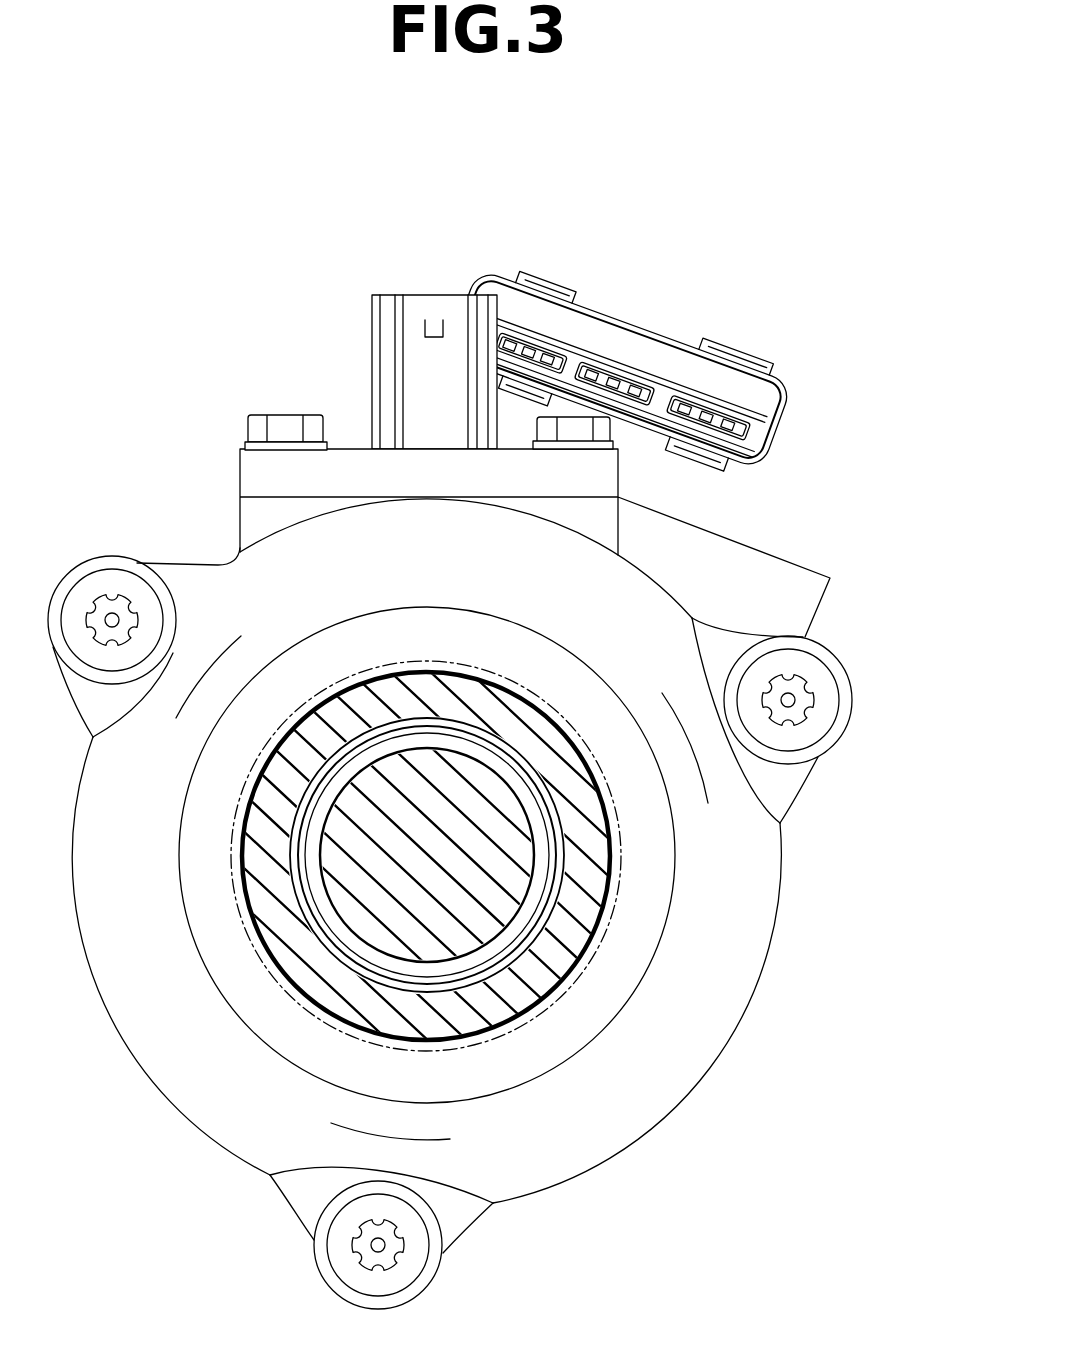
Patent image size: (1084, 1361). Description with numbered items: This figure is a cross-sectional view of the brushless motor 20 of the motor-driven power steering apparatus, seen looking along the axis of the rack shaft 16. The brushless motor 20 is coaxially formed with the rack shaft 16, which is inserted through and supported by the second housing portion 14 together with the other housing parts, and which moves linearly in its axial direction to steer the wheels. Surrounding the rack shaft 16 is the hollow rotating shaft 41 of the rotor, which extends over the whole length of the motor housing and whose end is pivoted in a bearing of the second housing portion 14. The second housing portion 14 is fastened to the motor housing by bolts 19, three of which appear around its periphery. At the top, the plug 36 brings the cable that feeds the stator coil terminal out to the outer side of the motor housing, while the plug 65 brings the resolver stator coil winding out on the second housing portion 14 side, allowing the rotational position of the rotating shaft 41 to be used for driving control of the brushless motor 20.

The second housing portion 14 is at (760, 920).
The rack shaft 16 is at (397, 902).
The bolt 19 is at (828, 700).
The brushless motor 20 is at (786, 501).
The plug 36 is at (763, 403).
The rotating shaft 41 is at (540, 927).
The plug 65 is at (372, 322).